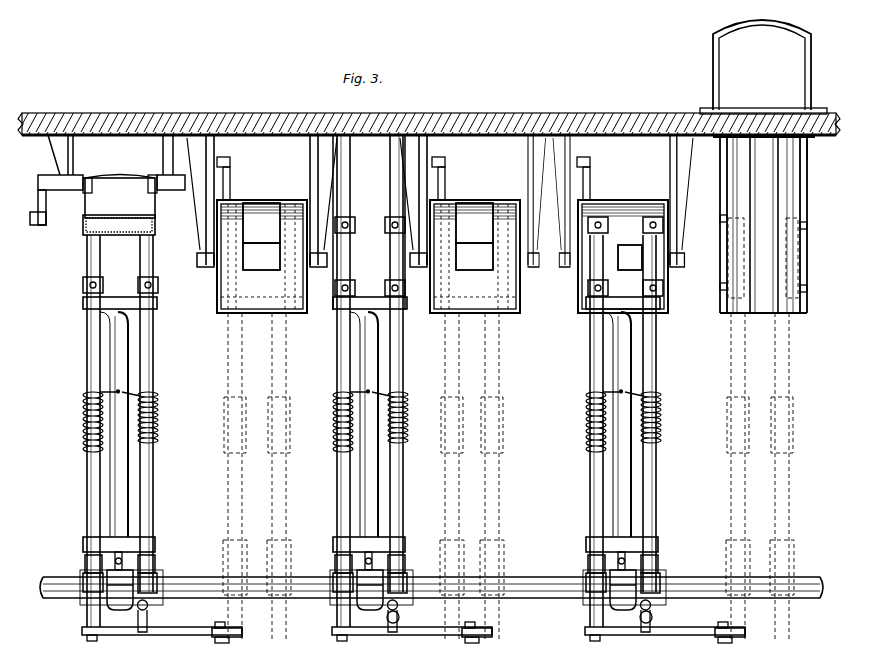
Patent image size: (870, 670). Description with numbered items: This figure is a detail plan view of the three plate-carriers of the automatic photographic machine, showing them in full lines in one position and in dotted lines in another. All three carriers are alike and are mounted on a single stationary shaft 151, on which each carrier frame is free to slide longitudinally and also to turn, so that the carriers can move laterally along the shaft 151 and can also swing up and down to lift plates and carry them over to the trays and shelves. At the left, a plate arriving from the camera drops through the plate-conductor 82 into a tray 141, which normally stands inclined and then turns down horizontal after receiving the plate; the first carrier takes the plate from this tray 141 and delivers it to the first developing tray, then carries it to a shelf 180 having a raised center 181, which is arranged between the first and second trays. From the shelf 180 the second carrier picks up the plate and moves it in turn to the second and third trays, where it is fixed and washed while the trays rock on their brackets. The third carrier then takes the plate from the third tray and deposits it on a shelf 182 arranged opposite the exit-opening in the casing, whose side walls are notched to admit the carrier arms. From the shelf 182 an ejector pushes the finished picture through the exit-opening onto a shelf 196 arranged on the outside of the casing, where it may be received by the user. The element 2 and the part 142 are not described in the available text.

The base plate 2 is at (288, 114).
The plate-conductor 82 is at (116, 238).
The tray 141 is at (117, 190).
The bracket 142 is at (38, 226).
The stationary shaft 151 is at (172, 581).
The shelf 180 is at (346, 185).
The raised center 181 is at (383, 185).
The shelf 182 is at (795, 210).
The shelf 196 is at (712, 90).